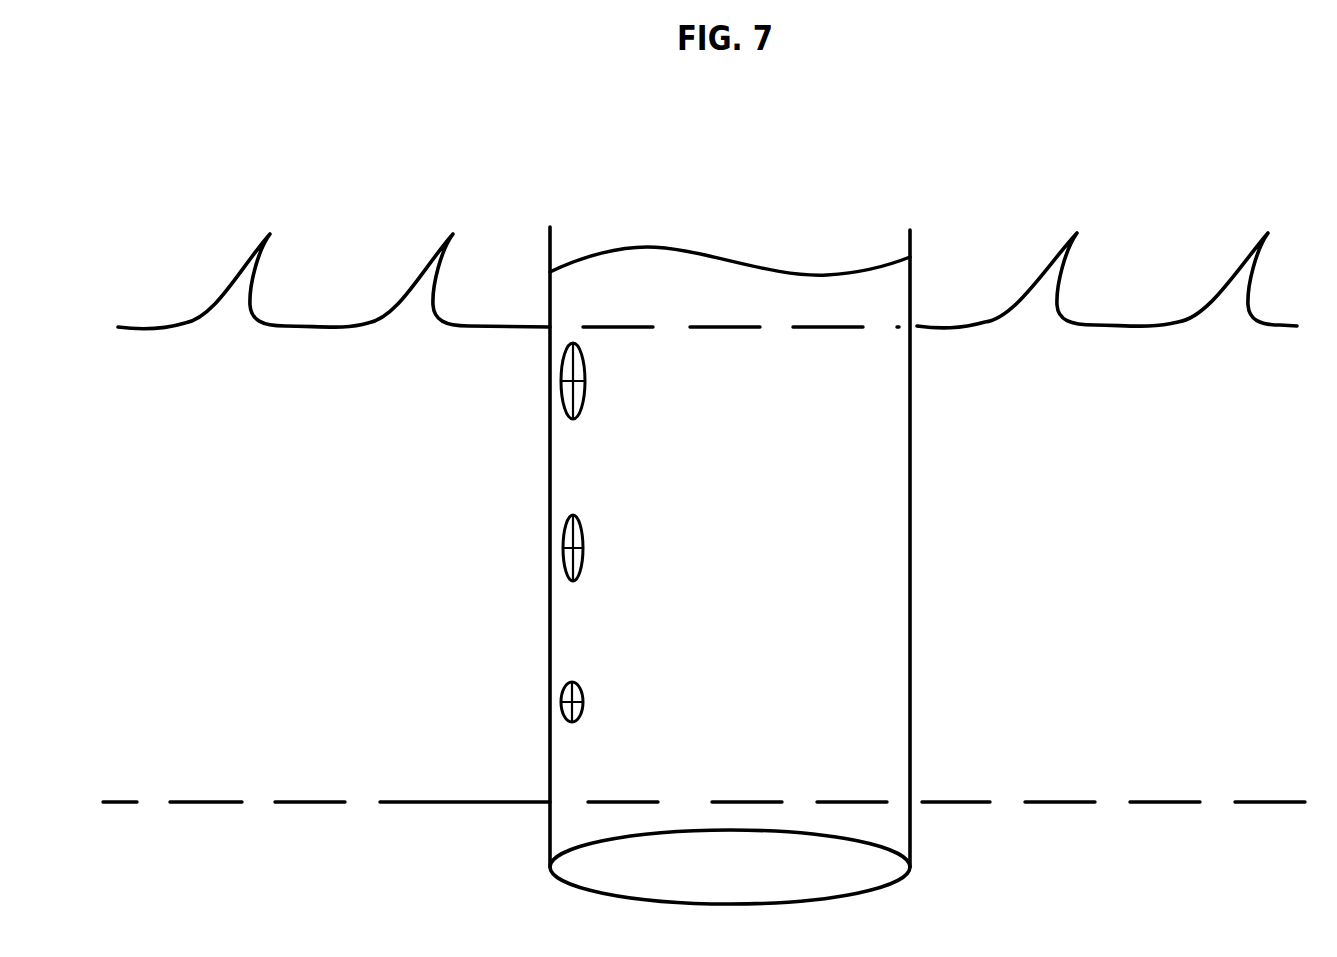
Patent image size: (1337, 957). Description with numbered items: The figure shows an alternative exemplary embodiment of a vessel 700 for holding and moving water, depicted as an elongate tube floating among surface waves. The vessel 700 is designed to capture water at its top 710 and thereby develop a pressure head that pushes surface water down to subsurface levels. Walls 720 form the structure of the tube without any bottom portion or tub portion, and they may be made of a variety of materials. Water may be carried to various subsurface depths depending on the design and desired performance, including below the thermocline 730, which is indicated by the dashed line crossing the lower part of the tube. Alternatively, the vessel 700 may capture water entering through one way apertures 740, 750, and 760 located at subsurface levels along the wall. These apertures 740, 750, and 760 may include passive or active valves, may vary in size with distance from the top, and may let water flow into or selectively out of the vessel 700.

The vessel 700 is at (550, 195).
The top 710 is at (755, 232).
The walls 720 is at (910, 535).
The thermocline 730 is at (960, 802).
The one way aperture 740 is at (584, 403).
The one way aperture 750 is at (583, 565).
The one way aperture 760 is at (583, 695).